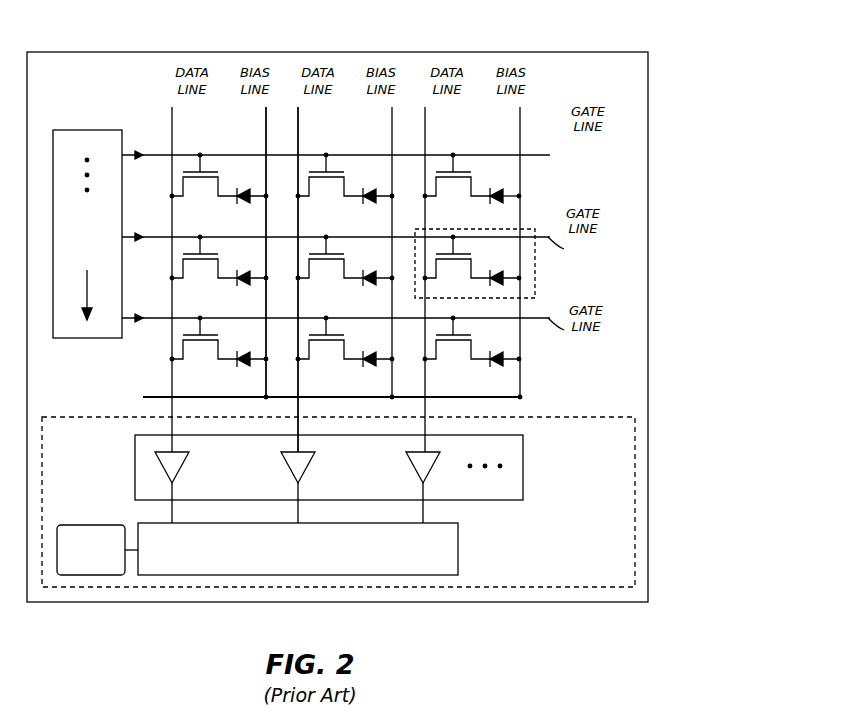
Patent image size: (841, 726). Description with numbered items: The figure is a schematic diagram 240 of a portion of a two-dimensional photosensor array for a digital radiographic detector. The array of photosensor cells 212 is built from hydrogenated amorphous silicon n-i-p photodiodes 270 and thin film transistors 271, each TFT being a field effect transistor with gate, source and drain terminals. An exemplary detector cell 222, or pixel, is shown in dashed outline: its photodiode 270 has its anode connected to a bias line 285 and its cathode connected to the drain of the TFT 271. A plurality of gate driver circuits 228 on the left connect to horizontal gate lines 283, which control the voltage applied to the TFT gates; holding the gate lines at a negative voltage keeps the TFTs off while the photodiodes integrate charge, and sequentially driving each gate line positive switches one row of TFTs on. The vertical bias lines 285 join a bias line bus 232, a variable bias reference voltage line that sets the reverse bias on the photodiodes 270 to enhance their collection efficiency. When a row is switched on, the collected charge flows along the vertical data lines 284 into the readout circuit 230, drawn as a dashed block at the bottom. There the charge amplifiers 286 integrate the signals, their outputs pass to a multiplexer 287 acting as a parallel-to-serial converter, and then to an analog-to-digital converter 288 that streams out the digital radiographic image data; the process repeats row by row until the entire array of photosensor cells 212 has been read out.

The schematic diagram 240 is at (718, 53).
The gate driver circuits 228 is at (68, 130).
The array of photosensor cells 212 is at (548, 103).
The data lines 284 is at (330, 122).
The bias lines 285 is at (266, 143).
The gate lines 283 is at (550, 155).
The thin film transistor 271 is at (454, 156).
The photodiode 270 is at (503, 194).
The detector cell 222 is at (536, 262).
The bias line bus 232 is at (400, 389).
The readout circuit 230 is at (635, 565).
The charge amplifiers 286 is at (523, 466).
The multiplexer 287 is at (460, 546).
The analog-to-digital converter 288 is at (83, 525).